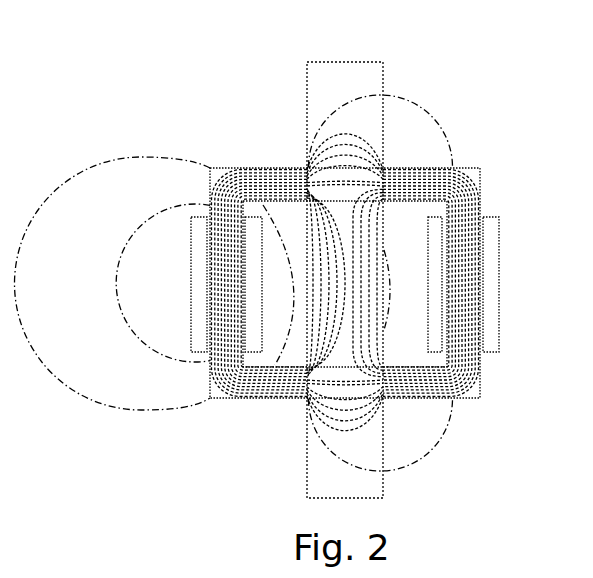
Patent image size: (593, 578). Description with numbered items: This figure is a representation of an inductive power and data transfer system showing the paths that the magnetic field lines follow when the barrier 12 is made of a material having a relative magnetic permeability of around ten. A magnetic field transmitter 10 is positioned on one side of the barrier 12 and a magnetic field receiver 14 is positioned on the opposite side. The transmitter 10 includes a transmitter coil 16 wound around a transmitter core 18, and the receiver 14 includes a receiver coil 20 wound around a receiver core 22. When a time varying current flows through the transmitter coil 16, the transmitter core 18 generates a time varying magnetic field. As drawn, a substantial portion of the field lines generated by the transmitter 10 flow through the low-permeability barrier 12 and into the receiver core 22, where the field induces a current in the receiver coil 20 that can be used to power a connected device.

The magnetic field transmitter 10 is at (215, 143).
The barrier 12 is at (384, 73).
The magnetic field receiver 14 is at (497, 150).
The transmitter coil 16 is at (206, 342).
The transmitter core 18 is at (230, 400).
The receiver coil 20 is at (499, 335).
The receiver core 22 is at (471, 400).